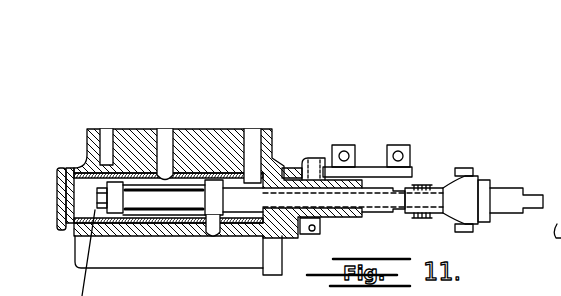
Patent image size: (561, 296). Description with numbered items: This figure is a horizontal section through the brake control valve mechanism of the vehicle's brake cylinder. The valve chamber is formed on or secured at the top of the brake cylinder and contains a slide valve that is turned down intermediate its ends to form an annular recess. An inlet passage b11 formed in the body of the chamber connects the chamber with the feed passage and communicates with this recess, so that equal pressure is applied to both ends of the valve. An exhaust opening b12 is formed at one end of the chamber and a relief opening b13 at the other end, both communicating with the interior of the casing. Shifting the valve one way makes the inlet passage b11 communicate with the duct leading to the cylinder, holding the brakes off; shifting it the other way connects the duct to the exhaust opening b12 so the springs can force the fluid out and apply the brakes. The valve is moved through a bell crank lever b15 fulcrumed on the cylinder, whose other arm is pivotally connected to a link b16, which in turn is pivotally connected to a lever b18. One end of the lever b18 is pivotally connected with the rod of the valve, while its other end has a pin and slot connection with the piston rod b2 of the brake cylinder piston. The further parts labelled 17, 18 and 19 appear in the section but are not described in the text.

The relief opening b13 is at (103, 135).
The inlet passage b11 is at (168, 140).
The exhaust opening b12 is at (250, 135).
The bell crank lever b15 is at (318, 152).
The link b16 is at (388, 213).
The lever b18 is at (440, 180).
The piston rod b2 is at (503, 192).
The nut 17 is at (208, 208).
The nut 18 is at (142, 208).
The rod 19 is at (175, 210).